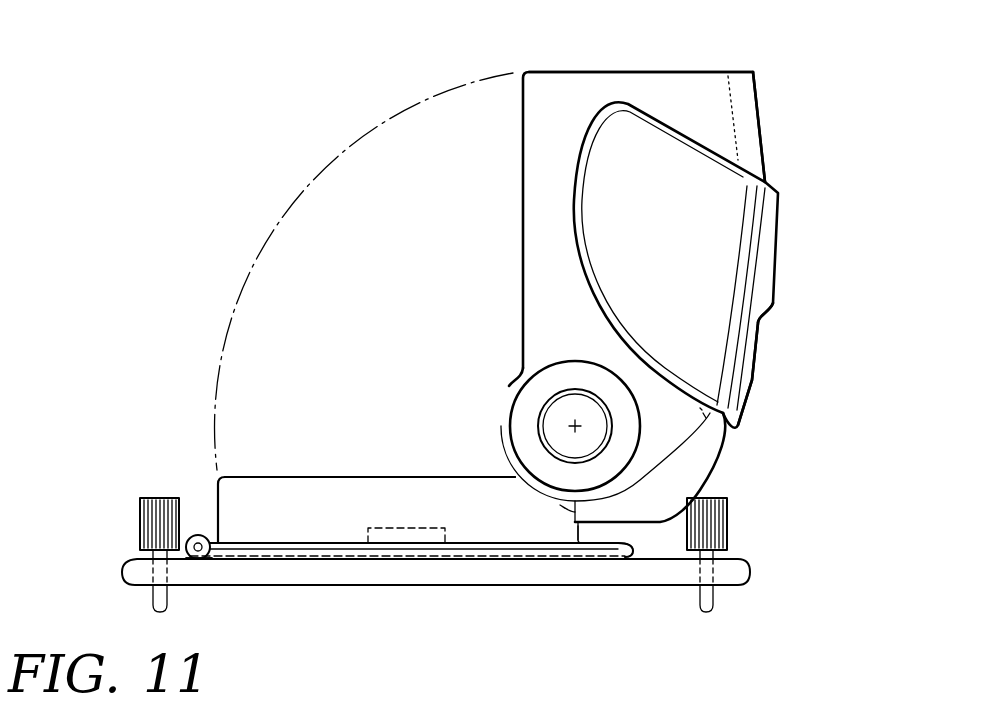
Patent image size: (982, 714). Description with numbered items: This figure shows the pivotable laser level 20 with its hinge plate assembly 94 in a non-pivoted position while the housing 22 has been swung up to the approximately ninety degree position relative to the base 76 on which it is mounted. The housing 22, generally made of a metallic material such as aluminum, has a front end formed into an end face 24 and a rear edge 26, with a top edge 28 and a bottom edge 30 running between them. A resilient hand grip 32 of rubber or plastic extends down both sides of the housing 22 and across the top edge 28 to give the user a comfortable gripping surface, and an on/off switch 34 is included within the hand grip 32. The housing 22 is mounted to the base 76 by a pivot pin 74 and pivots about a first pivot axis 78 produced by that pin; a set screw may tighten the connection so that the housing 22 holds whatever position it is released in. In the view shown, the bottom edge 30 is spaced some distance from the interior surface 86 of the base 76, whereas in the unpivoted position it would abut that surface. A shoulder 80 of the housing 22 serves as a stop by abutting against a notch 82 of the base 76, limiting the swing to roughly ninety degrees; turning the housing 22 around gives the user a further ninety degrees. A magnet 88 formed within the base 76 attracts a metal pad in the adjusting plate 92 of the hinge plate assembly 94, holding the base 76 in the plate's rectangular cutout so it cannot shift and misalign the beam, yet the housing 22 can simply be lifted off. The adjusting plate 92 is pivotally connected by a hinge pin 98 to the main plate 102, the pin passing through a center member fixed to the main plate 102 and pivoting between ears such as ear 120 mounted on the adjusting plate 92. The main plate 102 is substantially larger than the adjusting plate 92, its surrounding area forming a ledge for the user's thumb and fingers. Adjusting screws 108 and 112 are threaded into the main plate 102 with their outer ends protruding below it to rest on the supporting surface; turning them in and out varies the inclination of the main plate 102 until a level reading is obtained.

The pivotable laser level 20 is at (191, 272).
The housing 22 is at (710, 93).
The end face 24 is at (684, 71).
The rear edge 26 is at (626, 526).
The top edge 28 is at (762, 132).
The bottom edge 30 is at (523, 212).
The hand grip 32 is at (661, 235).
The on/off switch 34 is at (754, 398).
The pivot pin 74 is at (572, 402).
The base 76 is at (262, 514).
The first pivot axis 78 is at (568, 428).
The shoulder 80 is at (558, 513).
The notch 82 is at (578, 530).
The interior surface 86 is at (328, 477).
The magnet 88 is at (397, 528).
The adjusting plate 92 is at (630, 558).
The hinge plate assembly 94 is at (472, 592).
The hinge pin 98 is at (205, 560).
The main plate 102 is at (325, 574).
The adjusting screw 108 is at (715, 516).
The adjusting screw 112 is at (153, 523).
The ear 120 is at (201, 534).